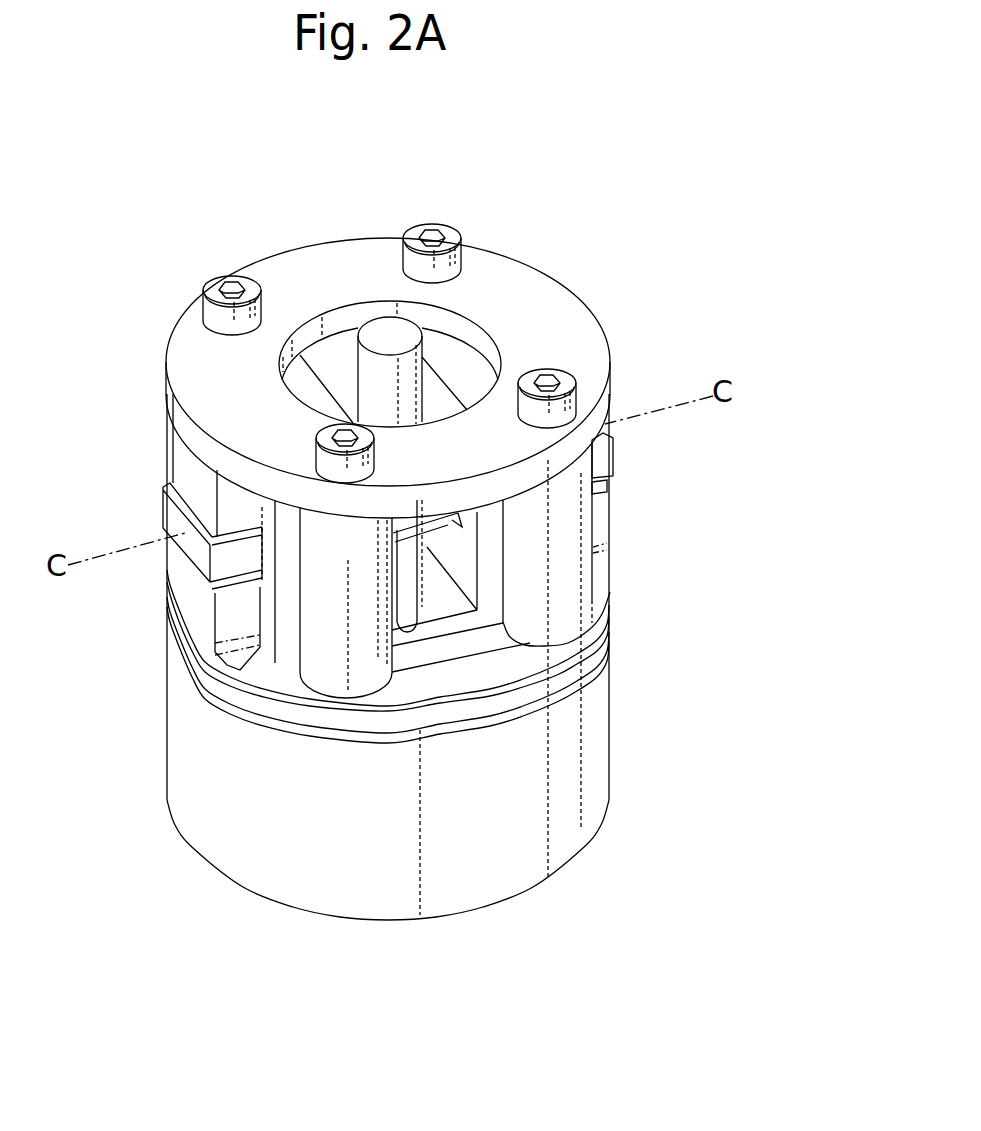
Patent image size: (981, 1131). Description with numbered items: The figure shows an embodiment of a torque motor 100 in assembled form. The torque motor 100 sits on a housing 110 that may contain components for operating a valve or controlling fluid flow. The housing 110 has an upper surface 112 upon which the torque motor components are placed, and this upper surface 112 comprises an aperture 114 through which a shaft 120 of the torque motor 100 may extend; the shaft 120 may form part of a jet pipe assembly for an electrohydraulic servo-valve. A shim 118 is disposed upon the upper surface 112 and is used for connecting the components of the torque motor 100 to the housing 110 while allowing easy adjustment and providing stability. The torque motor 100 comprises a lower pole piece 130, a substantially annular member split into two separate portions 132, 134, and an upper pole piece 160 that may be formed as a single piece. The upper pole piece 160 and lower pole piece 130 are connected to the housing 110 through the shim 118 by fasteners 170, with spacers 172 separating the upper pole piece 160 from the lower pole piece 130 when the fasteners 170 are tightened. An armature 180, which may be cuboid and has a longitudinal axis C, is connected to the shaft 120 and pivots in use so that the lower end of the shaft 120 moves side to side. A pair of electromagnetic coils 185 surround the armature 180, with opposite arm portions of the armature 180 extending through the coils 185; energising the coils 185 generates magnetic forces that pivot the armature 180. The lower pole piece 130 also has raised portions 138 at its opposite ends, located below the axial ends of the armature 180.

The torque motor 100 is at (705, 224).
The housing 110 is at (230, 853).
The upper surface 112 is at (437, 613).
The aperture 114 is at (418, 627).
The shim 118 is at (557, 693).
The shaft 120 is at (413, 545).
The lower pole piece 130 is at (193, 640).
The first portion 132 is at (327, 710).
The second portion 134 is at (527, 658).
The raised portions 138 is at (607, 495).
The upper pole piece 160 is at (523, 273).
The fasteners 170 is at (428, 226).
The spacers 172 is at (563, 575).
The armature 180 is at (163, 510).
The electromagnetic coils 185 is at (308, 373).